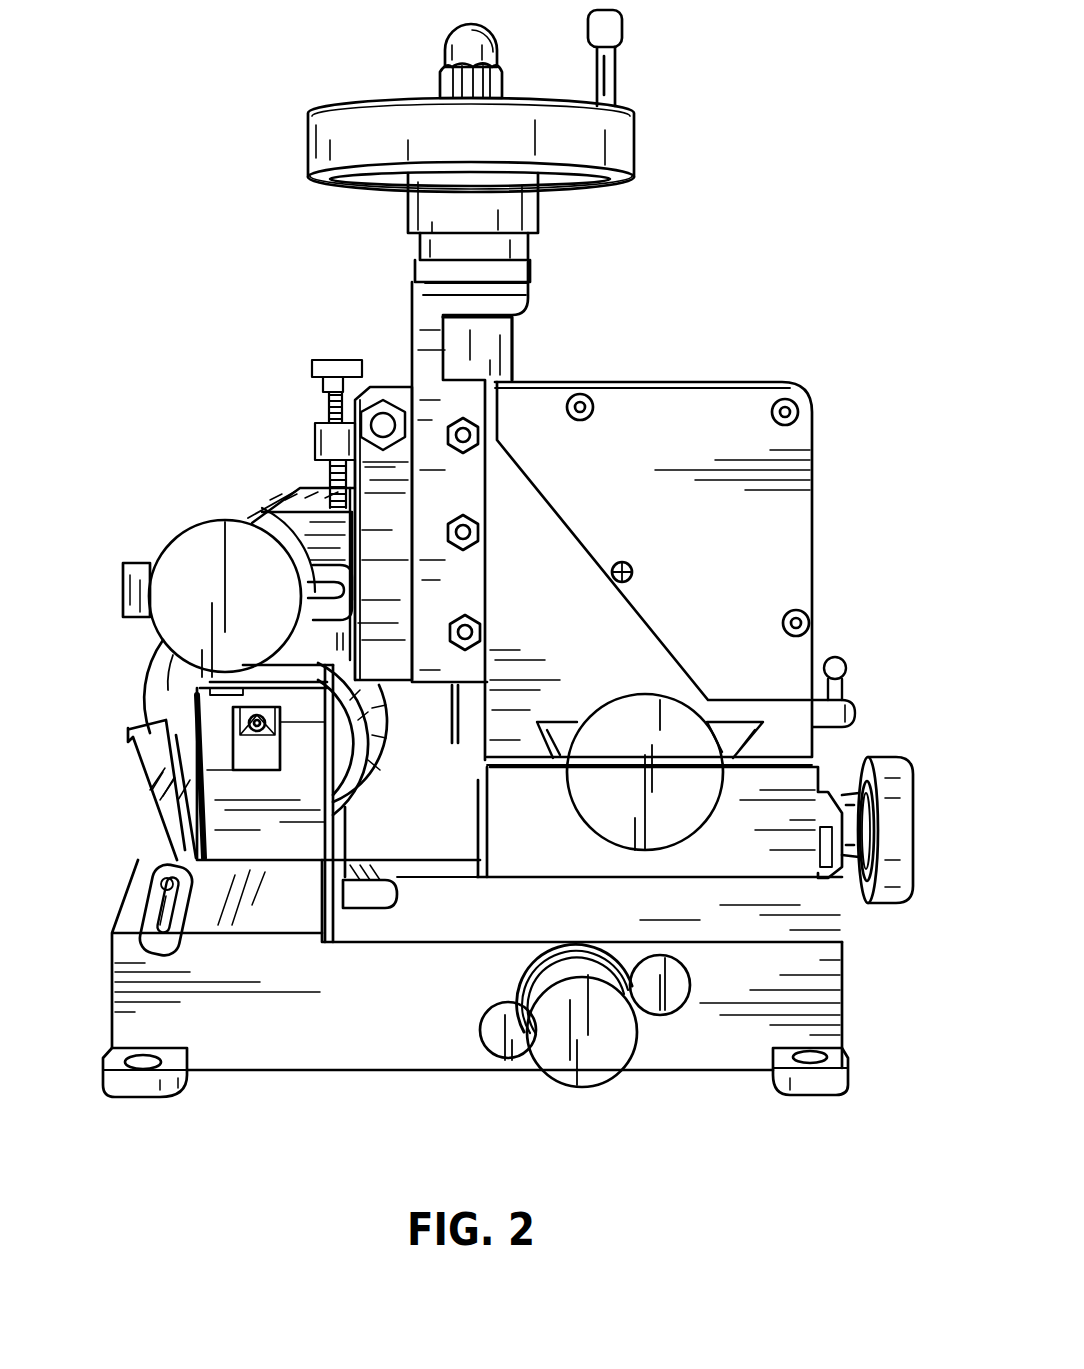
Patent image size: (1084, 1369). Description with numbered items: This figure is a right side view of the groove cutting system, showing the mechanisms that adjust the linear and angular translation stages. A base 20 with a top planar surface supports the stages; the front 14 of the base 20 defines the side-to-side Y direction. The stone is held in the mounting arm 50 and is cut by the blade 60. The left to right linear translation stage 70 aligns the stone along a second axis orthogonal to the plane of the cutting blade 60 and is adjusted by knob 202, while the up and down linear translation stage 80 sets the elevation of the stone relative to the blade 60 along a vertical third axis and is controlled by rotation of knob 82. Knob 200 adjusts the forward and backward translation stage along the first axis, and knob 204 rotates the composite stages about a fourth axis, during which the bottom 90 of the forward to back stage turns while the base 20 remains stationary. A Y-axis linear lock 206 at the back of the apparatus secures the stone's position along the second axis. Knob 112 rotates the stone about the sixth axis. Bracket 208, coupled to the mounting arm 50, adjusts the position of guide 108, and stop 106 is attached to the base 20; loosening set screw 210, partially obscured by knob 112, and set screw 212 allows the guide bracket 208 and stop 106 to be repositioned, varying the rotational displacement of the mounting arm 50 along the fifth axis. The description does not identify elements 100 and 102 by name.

The front of the base 14 is at (120, 957).
The base 20 is at (823, 978).
The mounting arm 50 is at (295, 488).
The cutting blade 60 is at (140, 670).
The left to right linear translation stage 70 is at (727, 730).
The up and down linear translation stage 80 is at (497, 381).
The knob 82 is at (636, 130).
The bottom of the forward to back linear translation stage 90 is at (473, 927).
The clamp block 100 is at (357, 360).
The adjusting screw 102 is at (315, 363).
The stop 106 is at (150, 795).
The guide 108 is at (143, 698).
The knob 112 is at (178, 542).
The knob 200 is at (903, 752).
The knob 202 is at (625, 708).
The knob 204 is at (593, 1073).
The Y-axis linear lock 206 is at (847, 666).
The bracket 208 is at (262, 520).
The set screw 210 is at (308, 588).
The set screw 212 is at (163, 890).